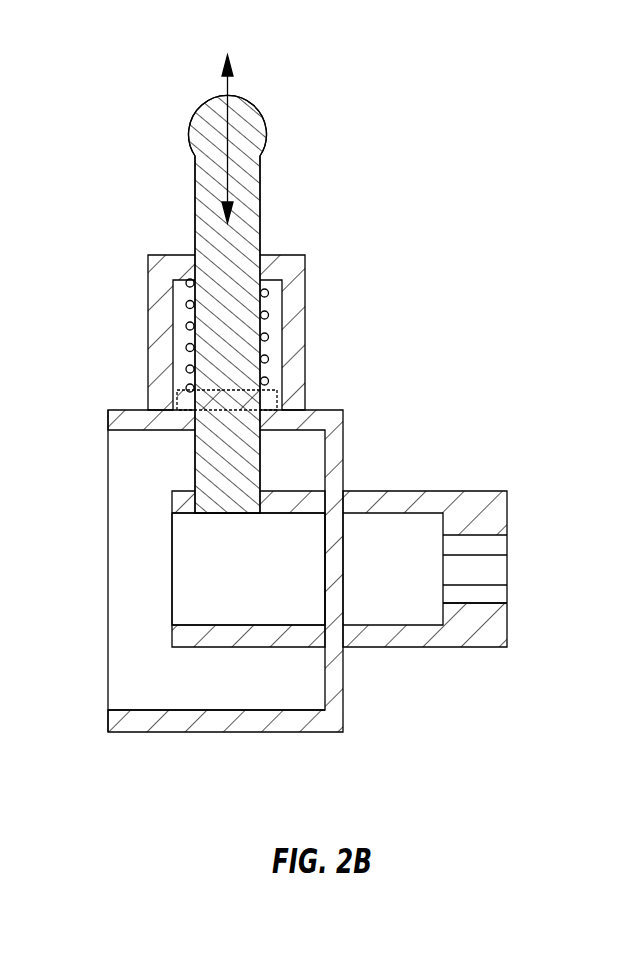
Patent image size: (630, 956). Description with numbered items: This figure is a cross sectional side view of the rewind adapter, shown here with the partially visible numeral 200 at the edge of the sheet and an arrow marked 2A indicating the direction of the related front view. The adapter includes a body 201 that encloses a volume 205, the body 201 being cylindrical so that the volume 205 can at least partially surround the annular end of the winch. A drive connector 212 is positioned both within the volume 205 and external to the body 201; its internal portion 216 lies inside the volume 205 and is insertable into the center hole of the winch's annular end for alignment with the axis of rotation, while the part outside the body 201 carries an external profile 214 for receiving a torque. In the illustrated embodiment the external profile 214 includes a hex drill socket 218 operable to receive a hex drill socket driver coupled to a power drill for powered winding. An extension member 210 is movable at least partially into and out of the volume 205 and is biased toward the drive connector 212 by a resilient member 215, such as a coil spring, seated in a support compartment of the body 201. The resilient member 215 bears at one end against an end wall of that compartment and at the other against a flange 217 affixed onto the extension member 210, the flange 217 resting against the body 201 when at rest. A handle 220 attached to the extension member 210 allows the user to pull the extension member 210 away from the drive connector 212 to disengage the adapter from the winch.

The valve assembly 200 is at (11, 100).
The body 201 is at (345, 680).
The volume 205 is at (155, 590).
The extension member 210 is at (260, 467).
The drive connector 212 is at (455, 491).
The external profile 214 is at (485, 647).
The resilient member 215 is at (264, 337).
The internal portion 216 is at (233, 647).
The flange 217 is at (263, 400).
The hex drill socket 218 is at (516, 553).
The handle 220 is at (257, 135).
The section view 2A is at (125, 622).